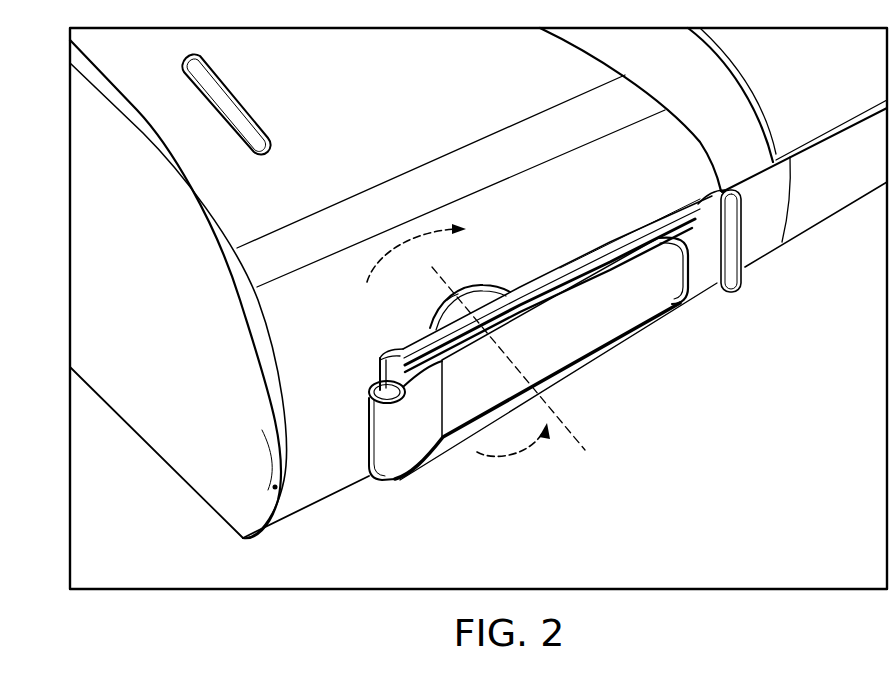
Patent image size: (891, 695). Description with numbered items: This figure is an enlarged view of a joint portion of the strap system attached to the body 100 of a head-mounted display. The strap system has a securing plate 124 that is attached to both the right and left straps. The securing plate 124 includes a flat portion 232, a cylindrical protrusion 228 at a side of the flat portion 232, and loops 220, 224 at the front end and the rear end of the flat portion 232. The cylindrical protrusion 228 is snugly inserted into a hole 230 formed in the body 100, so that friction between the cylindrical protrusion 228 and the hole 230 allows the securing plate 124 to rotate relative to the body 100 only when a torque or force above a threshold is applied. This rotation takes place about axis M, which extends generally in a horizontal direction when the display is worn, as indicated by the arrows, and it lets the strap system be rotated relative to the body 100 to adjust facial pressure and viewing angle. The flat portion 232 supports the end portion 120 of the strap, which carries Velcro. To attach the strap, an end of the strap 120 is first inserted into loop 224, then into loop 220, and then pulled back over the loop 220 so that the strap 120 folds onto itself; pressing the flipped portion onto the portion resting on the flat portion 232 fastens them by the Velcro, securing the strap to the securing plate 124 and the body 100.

The body 100 is at (425, 117).
The end portion of the strap 120 is at (600, 363).
The securing plate 124 is at (540, 277).
The loop 220 is at (383, 363).
The loop 224 is at (730, 263).
The cylindrical protrusion 228 is at (455, 305).
The hole 230 is at (460, 297).
The flat portion 232 is at (650, 218).
The axis M is at (590, 443).